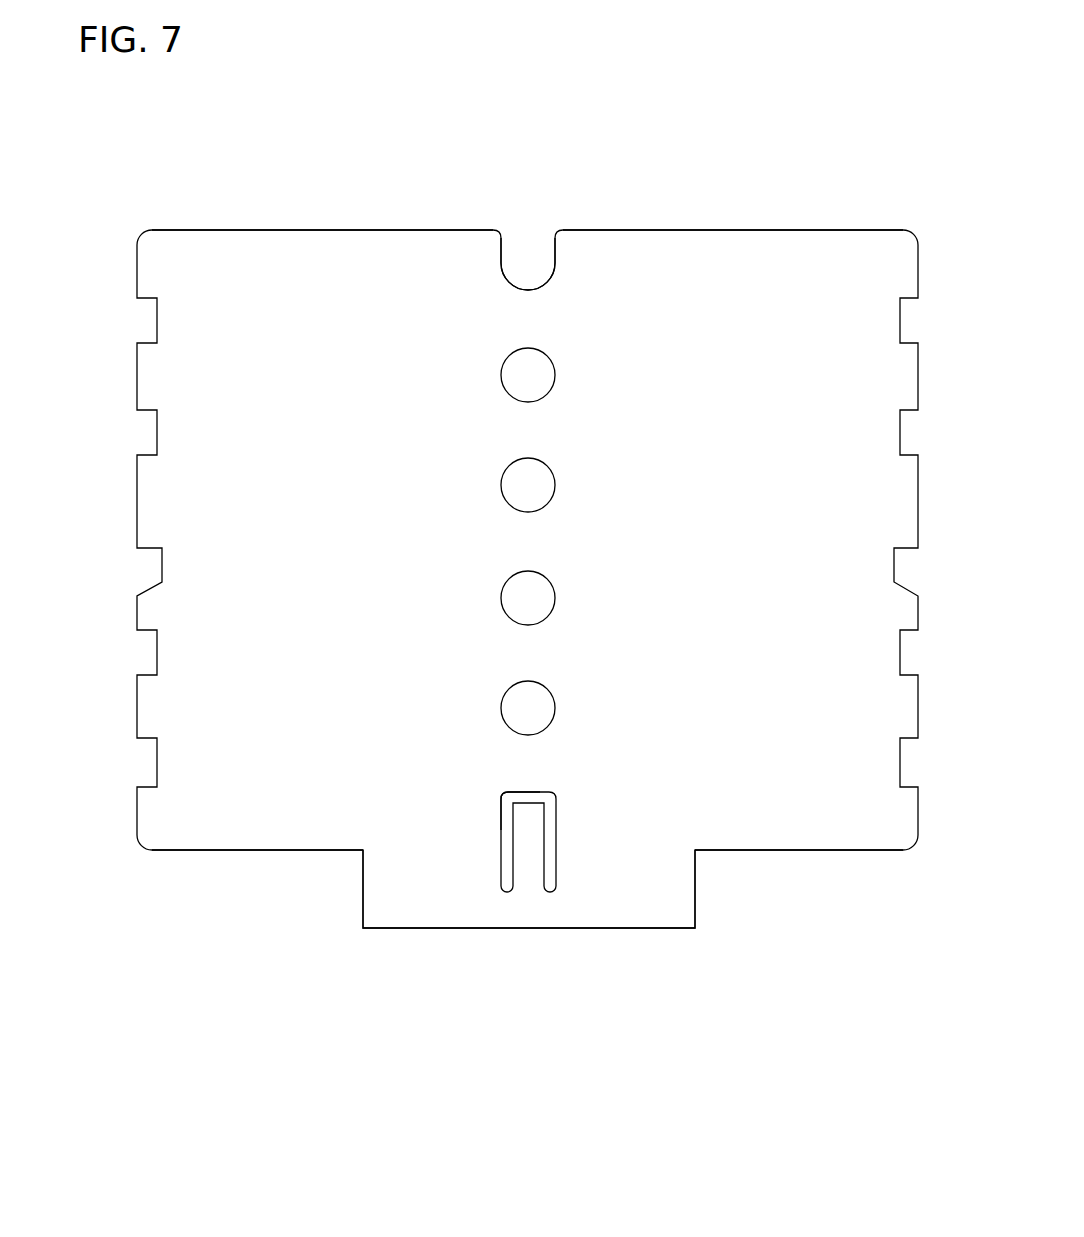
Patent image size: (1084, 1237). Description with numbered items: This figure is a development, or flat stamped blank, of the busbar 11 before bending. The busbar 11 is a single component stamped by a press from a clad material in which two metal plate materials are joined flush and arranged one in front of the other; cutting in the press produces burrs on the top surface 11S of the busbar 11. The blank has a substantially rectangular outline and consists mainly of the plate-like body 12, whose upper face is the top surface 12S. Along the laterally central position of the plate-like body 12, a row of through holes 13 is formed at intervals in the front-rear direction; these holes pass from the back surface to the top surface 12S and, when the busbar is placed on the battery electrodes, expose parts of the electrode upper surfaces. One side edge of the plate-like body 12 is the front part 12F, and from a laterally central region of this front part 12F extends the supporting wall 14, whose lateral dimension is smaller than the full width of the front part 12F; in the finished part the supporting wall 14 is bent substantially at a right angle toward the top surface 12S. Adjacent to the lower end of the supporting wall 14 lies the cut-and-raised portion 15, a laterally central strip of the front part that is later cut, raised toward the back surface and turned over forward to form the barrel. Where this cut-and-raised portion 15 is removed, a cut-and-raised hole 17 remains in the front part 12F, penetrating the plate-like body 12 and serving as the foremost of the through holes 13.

The busbar 11 is at (857, 147).
The top surface of the busbar 11S is at (740, 245).
The top surface of the plate-like body 12S is at (323, 252).
The front part of the plate-like body 12F is at (210, 850).
The plate-like body 12 is at (822, 828).
The through holes 13 is at (555, 483).
The supporting wall 14 is at (672, 908).
The cut-and-raised portion 15 is at (530, 833).
The cut-and-raised hole 17 is at (503, 823).